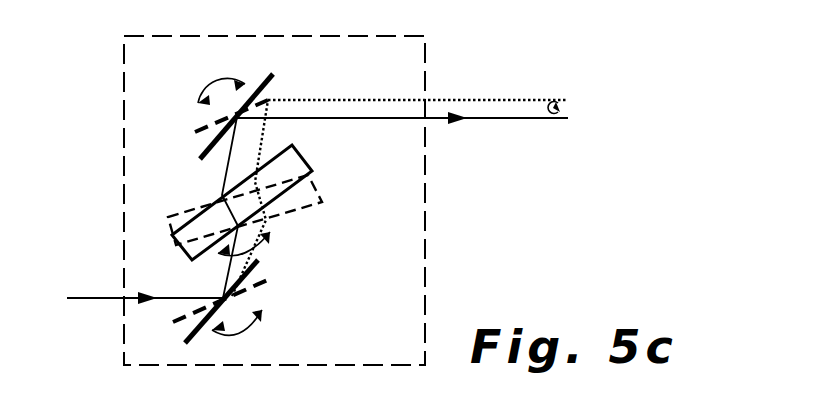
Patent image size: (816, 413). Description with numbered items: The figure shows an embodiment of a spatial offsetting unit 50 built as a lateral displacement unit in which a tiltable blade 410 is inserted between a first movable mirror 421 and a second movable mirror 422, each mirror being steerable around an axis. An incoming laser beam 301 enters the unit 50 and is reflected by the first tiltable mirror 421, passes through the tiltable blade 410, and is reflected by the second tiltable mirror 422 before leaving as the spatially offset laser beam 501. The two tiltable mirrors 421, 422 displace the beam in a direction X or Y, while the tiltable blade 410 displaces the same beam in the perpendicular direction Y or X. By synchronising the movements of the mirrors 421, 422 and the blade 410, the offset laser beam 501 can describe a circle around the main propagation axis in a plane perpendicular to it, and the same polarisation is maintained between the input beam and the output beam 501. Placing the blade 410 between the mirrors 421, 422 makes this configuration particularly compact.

The spatial offsetting unit 50 is at (428, 57).
The input light beam 301 is at (97, 295).
The first movable mirror 421 is at (185, 343).
The tiltable blade 410 is at (308, 164).
The second movable mirror 422 is at (273, 75).
The spatially offset laser beam 501 is at (503, 100).